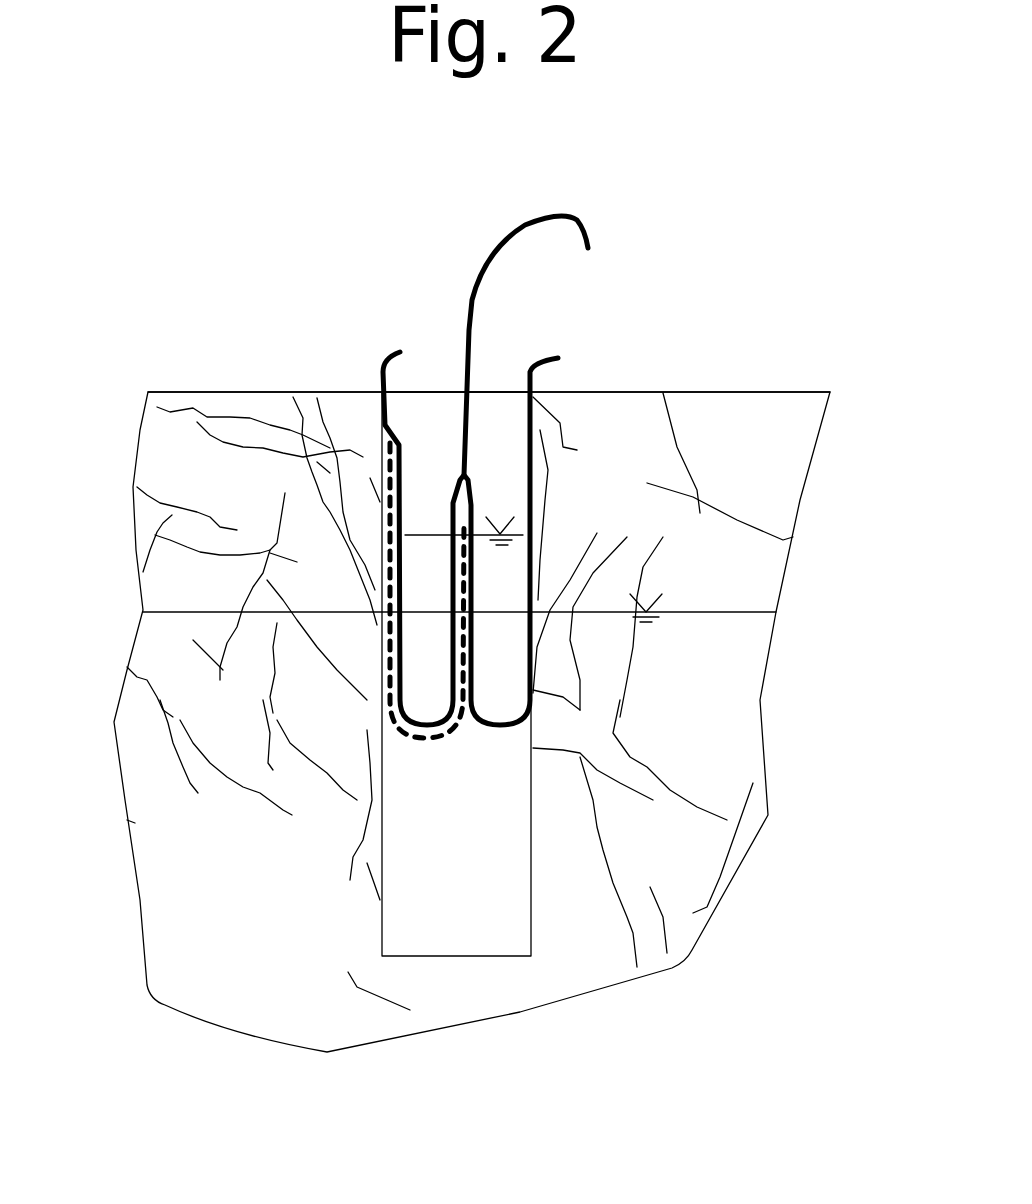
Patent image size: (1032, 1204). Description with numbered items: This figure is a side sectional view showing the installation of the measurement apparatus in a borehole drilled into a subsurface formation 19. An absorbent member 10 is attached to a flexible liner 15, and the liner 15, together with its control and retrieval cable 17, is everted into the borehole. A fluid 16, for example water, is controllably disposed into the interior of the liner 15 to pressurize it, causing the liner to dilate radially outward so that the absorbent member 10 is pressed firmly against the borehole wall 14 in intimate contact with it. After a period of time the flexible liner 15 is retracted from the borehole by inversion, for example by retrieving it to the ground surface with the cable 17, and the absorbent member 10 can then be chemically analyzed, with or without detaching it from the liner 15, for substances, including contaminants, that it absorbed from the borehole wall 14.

The absorbent member 10 is at (398, 742).
The borehole wall 14 is at (531, 903).
The flexible liner 15 is at (535, 383).
The fluid 16 is at (520, 617).
The control and retrieval cable 17 is at (467, 333).
The subsurface formation 19 is at (713, 705).